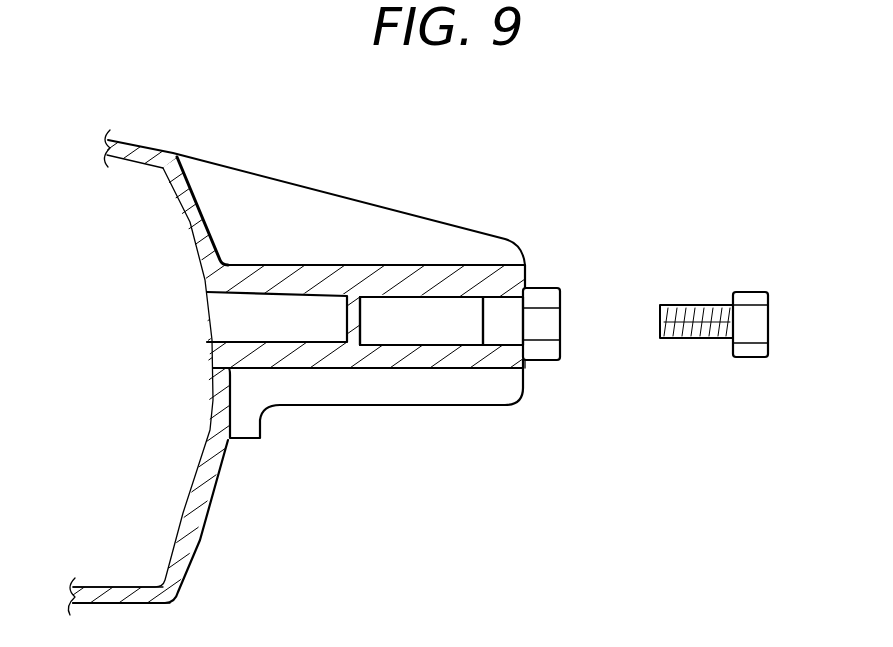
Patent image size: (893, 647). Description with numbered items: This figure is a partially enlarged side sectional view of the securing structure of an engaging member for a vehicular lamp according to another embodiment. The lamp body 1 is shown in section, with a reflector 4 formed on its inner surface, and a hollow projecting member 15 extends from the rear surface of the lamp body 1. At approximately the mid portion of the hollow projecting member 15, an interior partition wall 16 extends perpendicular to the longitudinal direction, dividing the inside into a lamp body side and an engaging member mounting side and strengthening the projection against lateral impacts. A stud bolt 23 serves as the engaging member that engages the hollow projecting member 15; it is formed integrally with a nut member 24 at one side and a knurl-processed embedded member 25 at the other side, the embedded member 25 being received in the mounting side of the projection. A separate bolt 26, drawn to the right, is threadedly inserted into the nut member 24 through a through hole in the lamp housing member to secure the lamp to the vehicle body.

The lamp body 1 is at (200, 210).
The reflector 4 is at (180, 512).
The hollow projecting member 15 is at (353, 267).
The partition wall 16 is at (358, 335).
The stud bolt 23 is at (560, 262).
The nut member 24 is at (542, 362).
The embedded member 25 is at (497, 337).
The bolt 26 is at (738, 292).